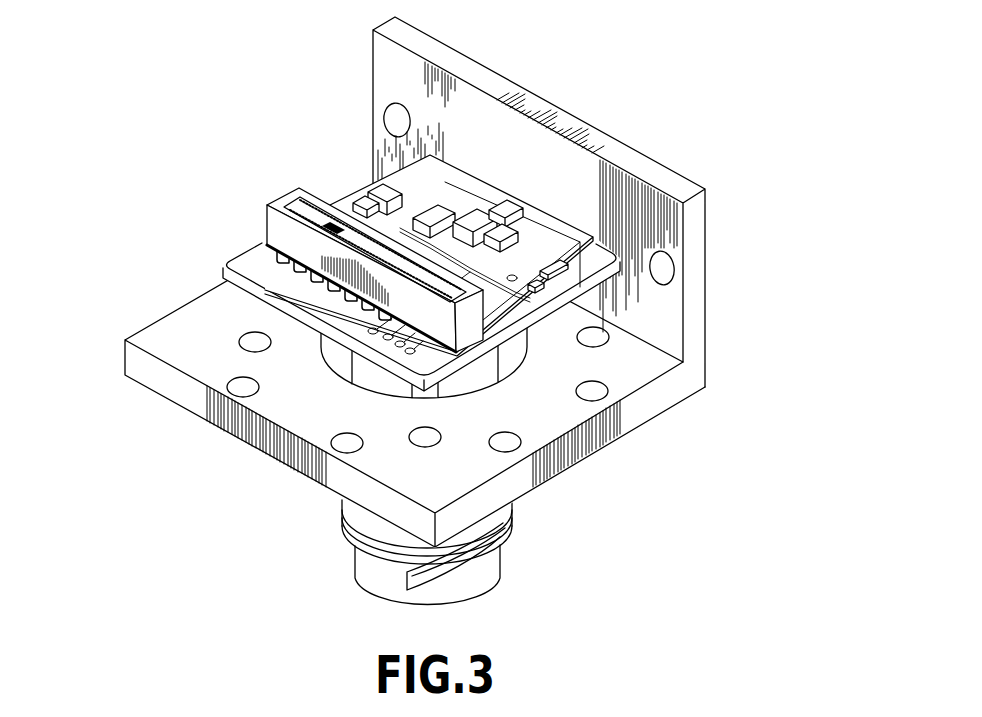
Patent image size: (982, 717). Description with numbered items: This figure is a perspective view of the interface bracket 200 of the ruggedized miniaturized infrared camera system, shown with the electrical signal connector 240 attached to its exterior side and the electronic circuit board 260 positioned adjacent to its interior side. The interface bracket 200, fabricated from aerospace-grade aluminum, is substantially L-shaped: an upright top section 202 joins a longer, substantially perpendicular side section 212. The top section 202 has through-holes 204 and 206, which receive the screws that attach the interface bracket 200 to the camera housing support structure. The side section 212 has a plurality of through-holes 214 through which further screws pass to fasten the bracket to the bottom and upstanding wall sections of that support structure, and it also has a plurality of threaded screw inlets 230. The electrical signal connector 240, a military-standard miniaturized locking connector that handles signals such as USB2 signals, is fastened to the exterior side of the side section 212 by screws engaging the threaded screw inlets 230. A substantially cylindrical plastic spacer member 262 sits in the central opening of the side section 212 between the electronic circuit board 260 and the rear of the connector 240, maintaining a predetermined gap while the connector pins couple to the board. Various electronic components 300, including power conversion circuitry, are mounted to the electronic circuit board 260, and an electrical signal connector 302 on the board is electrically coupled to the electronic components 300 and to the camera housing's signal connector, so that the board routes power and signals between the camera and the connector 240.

The interface bracket 200 is at (437, 289).
The top section 202 is at (553, 202).
The through-hole 204 is at (663, 268).
The through-hole 206 is at (393, 117).
The side section 212 is at (413, 378).
The through-holes 214 is at (243, 387).
The threaded screw inlets 230 is at (250, 342).
The electrical signal connector 240 is at (507, 580).
The electronic circuit board 260 is at (233, 264).
The spacer member 262 is at (483, 379).
The electronic components 300 is at (388, 197).
The electrical signal connector 302 is at (267, 198).